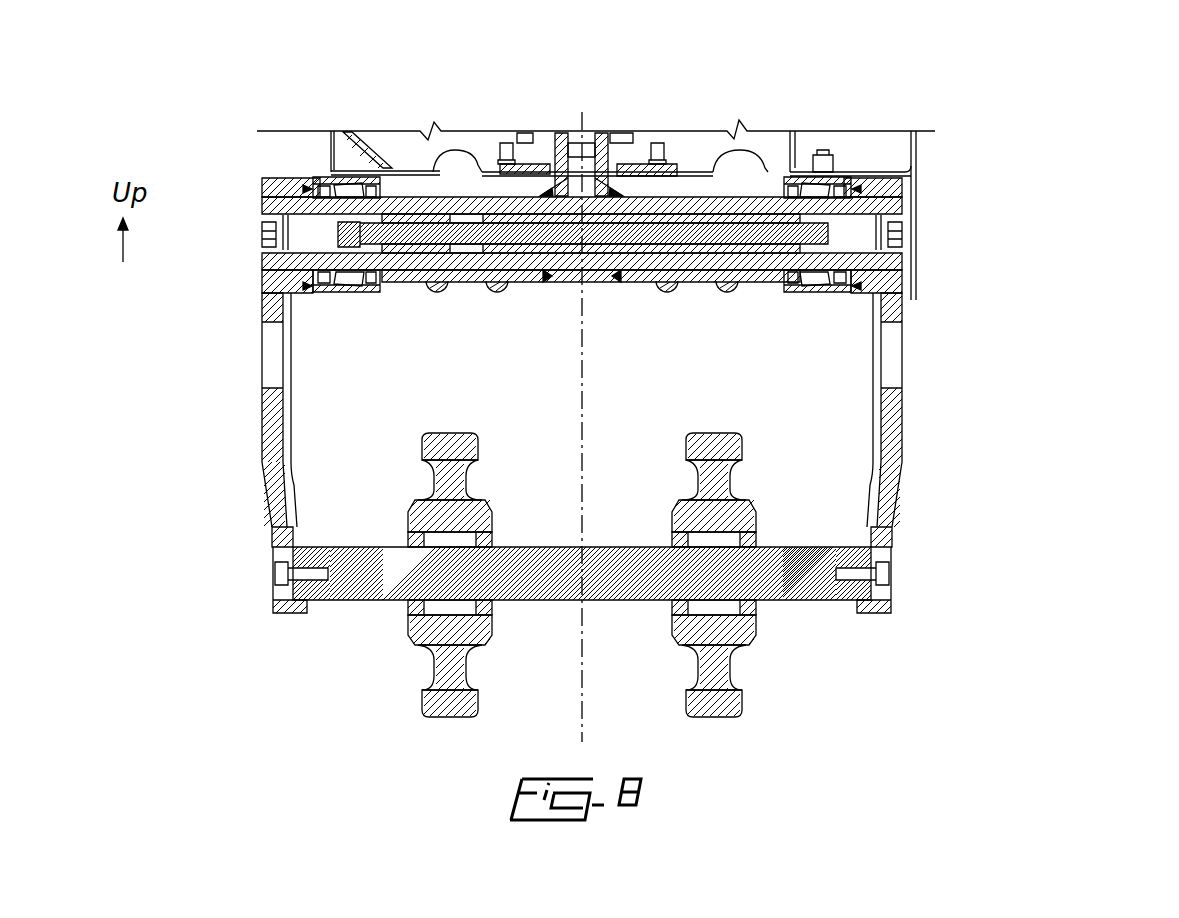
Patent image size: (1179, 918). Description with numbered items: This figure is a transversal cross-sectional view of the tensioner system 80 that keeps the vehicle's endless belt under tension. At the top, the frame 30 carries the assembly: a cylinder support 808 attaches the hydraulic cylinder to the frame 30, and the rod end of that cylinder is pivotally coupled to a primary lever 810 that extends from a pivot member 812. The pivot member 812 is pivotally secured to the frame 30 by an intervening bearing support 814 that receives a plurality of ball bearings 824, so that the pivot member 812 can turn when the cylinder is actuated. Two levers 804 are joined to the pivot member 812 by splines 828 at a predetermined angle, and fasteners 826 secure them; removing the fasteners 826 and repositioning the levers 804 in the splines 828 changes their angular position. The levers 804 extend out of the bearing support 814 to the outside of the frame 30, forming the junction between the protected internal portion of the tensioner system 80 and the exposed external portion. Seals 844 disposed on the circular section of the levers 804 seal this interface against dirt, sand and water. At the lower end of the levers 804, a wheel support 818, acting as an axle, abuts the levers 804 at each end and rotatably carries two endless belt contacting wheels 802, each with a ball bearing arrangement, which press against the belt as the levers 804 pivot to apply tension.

The frame 30 is at (468, 160).
The tensioner system 80 is at (1076, 114).
The endless belt contacting wheels 802 is at (420, 715).
The levers 804 is at (262, 432).
The cylinder support 808 is at (640, 142).
The primary lever 810 is at (561, 140).
The pivot member 812 is at (528, 292).
The bearing support 814 is at (437, 295).
The wheel support 818 is at (788, 588).
The ball bearings 824 is at (348, 188).
The fasteners 826 is at (895, 216).
The splines 828 is at (412, 210).
The seals 844 is at (318, 184).